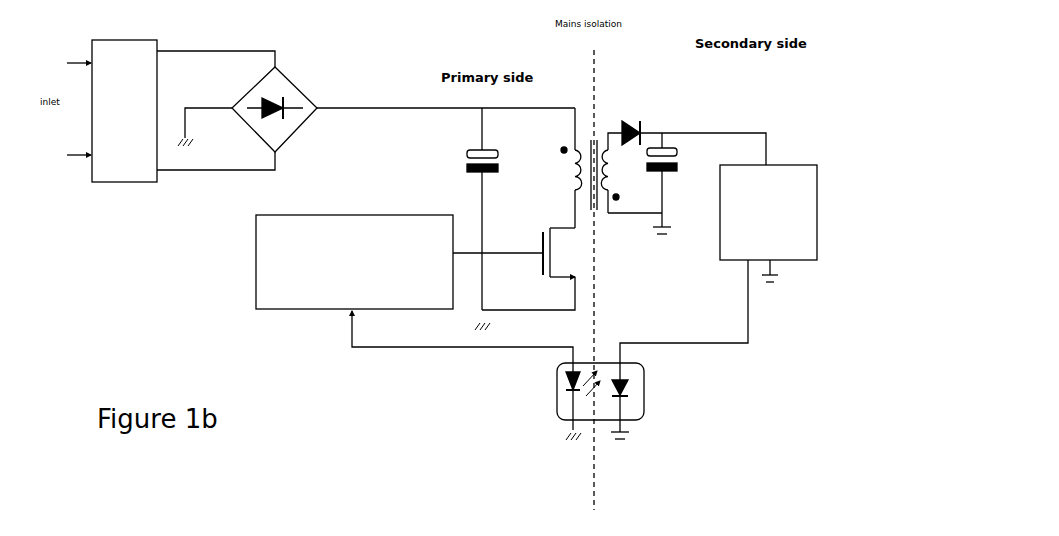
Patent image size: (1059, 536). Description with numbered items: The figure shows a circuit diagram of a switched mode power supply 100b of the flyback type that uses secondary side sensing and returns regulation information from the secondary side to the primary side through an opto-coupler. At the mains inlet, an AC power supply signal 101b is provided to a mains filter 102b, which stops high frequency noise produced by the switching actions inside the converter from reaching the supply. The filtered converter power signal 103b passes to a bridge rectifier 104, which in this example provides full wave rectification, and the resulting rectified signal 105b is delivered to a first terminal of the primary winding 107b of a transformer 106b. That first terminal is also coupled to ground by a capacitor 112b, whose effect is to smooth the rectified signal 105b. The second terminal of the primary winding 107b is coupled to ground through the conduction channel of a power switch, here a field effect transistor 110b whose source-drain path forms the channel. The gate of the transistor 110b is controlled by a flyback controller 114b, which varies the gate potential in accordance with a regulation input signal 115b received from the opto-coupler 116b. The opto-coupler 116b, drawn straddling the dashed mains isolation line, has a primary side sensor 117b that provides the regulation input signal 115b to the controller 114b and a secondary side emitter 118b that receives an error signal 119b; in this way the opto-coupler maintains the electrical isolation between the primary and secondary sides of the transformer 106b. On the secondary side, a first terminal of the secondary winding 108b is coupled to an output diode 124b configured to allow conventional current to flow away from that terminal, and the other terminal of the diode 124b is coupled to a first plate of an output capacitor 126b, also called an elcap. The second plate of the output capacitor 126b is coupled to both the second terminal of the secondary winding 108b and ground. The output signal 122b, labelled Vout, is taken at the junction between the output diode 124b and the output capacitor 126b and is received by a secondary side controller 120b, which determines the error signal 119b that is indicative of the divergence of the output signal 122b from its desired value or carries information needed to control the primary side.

The power supply 100b is at (512, 47).
The AC power supply signal 101b is at (60, 109).
The mains filter 102b is at (124, 111).
The converter power signal 103b is at (209, 49).
The bridge rectifier 104 is at (247, 109).
The rectified signal 105b is at (381, 106).
The transformer 106b is at (615, 180).
The primary winding 107b is at (582, 218).
The secondary winding 108b is at (620, 228).
The field effect transistor 110b is at (542, 232).
The capacitor 112b is at (476, 148).
The flyback controller 114b is at (354, 262).
The regulation input signal 115b is at (494, 350).
The opto-coupler 116b is at (595, 423).
The primary side sensor 117b is at (566, 378).
The secondary side emitter 118b is at (633, 405).
The error signal 119b is at (733, 345).
The secondary side controller 120b is at (768, 223).
The output signal 122b is at (723, 132).
The output diode 124b is at (625, 126).
The output capacitor 126b is at (667, 172).